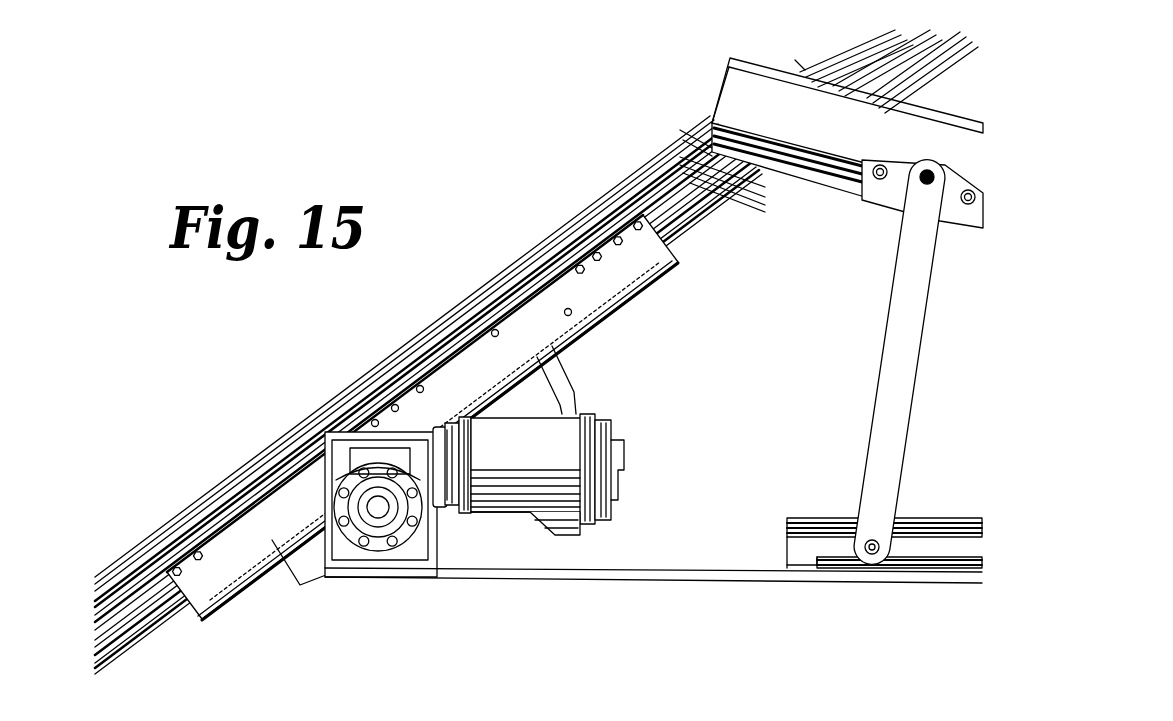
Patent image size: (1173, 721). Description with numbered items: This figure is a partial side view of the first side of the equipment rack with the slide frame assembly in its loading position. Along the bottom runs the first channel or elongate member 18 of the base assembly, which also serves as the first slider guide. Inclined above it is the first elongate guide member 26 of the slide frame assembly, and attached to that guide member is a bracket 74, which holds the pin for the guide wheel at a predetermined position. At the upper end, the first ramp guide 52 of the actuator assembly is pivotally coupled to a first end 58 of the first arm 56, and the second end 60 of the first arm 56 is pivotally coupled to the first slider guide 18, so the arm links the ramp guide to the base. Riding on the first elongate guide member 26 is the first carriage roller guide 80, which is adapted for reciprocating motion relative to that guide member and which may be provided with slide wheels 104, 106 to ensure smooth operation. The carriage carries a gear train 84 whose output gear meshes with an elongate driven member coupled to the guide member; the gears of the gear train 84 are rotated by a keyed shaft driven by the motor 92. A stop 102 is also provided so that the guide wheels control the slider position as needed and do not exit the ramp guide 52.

The first channel or elongate member 18 is at (962, 556).
The first elongate guide member 26 is at (398, 367).
The first ramp guide 52 is at (748, 90).
The first arm 56 is at (885, 367).
The first end of first arm 58 is at (922, 181).
The second end of first arm 60 is at (868, 543).
The bracket 74 is at (800, 65).
The first carriage roller guide 80 is at (612, 294).
The gear train 84 is at (380, 528).
The motor 92 is at (608, 462).
The stop 102 is at (510, 709).
The slide wheel 104 is at (181, 553).
The slide wheel 106 is at (572, 265).